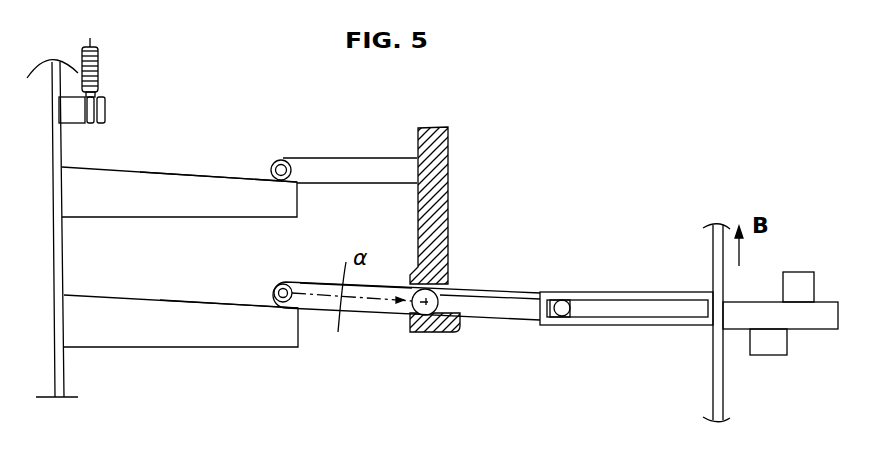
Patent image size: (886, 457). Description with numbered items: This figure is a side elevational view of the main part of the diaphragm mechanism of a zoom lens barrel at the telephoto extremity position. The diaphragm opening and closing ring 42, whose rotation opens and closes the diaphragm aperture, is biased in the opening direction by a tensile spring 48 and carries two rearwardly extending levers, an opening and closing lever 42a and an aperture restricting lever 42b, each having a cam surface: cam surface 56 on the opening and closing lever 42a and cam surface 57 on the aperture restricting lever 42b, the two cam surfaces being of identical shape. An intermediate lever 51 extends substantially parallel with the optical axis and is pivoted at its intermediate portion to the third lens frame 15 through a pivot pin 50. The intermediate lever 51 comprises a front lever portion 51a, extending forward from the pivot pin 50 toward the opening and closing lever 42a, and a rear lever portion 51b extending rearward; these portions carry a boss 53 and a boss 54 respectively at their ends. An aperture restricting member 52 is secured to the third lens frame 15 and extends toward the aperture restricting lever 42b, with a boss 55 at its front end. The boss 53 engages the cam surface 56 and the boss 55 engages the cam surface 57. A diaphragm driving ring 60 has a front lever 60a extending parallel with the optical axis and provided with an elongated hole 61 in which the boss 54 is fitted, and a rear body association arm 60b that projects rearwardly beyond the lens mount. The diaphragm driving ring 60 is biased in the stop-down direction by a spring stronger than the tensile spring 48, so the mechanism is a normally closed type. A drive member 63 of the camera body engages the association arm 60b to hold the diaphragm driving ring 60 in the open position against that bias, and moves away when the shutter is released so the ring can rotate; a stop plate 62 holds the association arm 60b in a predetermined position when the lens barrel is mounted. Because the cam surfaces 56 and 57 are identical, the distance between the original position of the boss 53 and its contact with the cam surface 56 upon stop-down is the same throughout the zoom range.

The third lens frame 15 is at (443, 165).
The diaphragm opening and closing ring 42 is at (63, 152).
The opening and closing lever 42a is at (196, 337).
The aperture restricting lever 42b is at (167, 214).
The tensile spring 48 is at (99, 70).
The pivot pin 50 is at (428, 289).
The intermediate lever 51 is at (459, 333).
The front lever portion 51a is at (370, 312).
The rear lever portion 51b is at (525, 320).
The aperture restricting member 52 is at (380, 157).
The boss 53 is at (275, 286).
The boss 54 is at (565, 315).
The boss 55 is at (283, 160).
The cam surface 56 is at (230, 304).
The cam surface 57 is at (206, 171).
The diaphragm driving ring 60 is at (724, 278).
The front lever 60a is at (668, 318).
The body association arm 60b is at (808, 321).
The elongated hole 61 is at (648, 300).
The stop plate 62 is at (779, 351).
The drive member 63 is at (797, 272).